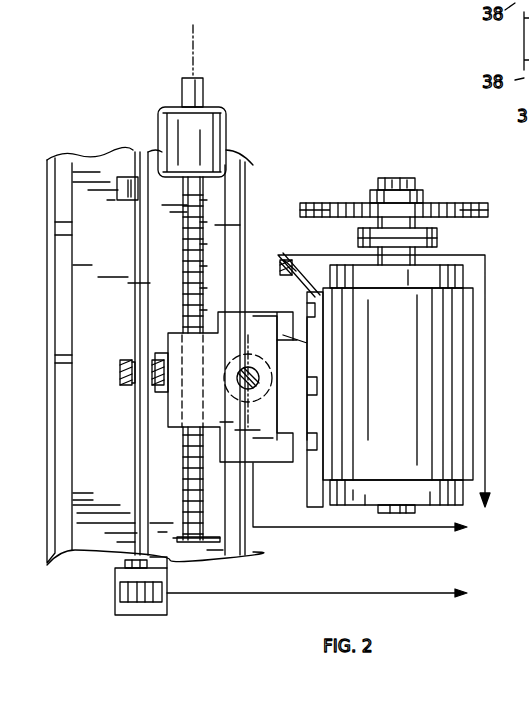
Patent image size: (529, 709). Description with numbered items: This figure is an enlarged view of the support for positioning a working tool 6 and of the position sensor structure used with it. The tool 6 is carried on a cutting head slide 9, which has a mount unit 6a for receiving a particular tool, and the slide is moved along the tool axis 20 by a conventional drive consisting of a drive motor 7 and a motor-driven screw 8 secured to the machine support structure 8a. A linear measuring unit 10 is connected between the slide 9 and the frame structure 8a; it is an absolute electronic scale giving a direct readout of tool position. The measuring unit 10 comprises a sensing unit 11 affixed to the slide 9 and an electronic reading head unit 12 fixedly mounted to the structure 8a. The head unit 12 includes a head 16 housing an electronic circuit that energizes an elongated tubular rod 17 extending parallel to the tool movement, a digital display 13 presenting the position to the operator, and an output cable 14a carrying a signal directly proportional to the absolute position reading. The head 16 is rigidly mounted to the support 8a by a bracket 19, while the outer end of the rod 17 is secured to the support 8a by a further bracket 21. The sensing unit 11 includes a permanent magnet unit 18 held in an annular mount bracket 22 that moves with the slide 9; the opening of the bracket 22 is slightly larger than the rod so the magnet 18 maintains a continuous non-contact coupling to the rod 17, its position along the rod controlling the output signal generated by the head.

The working tool 6 is at (438, 205).
The mount unit 6a is at (438, 240).
The drive motor 7 is at (226, 118).
The motor-driven screw 8 is at (200, 198).
The machine support structure 8a is at (109, 307).
The cutting head slide 9 is at (292, 416).
The linear measuring unit 10 is at (269, 260).
The sensing unit 11 is at (116, 375).
The electronic reading head unit 12 is at (132, 439).
The digital display 13 is at (158, 600).
The output cable 14a is at (360, 592).
The head 16 is at (110, 597).
The elongated tubular rod 17 is at (140, 490).
The permanent magnet unit 18 is at (122, 358).
The bracket 19 is at (168, 562).
The tool axis 20 is at (194, 53).
The bracket 21 is at (127, 183).
The mount bracket 22 is at (158, 338).